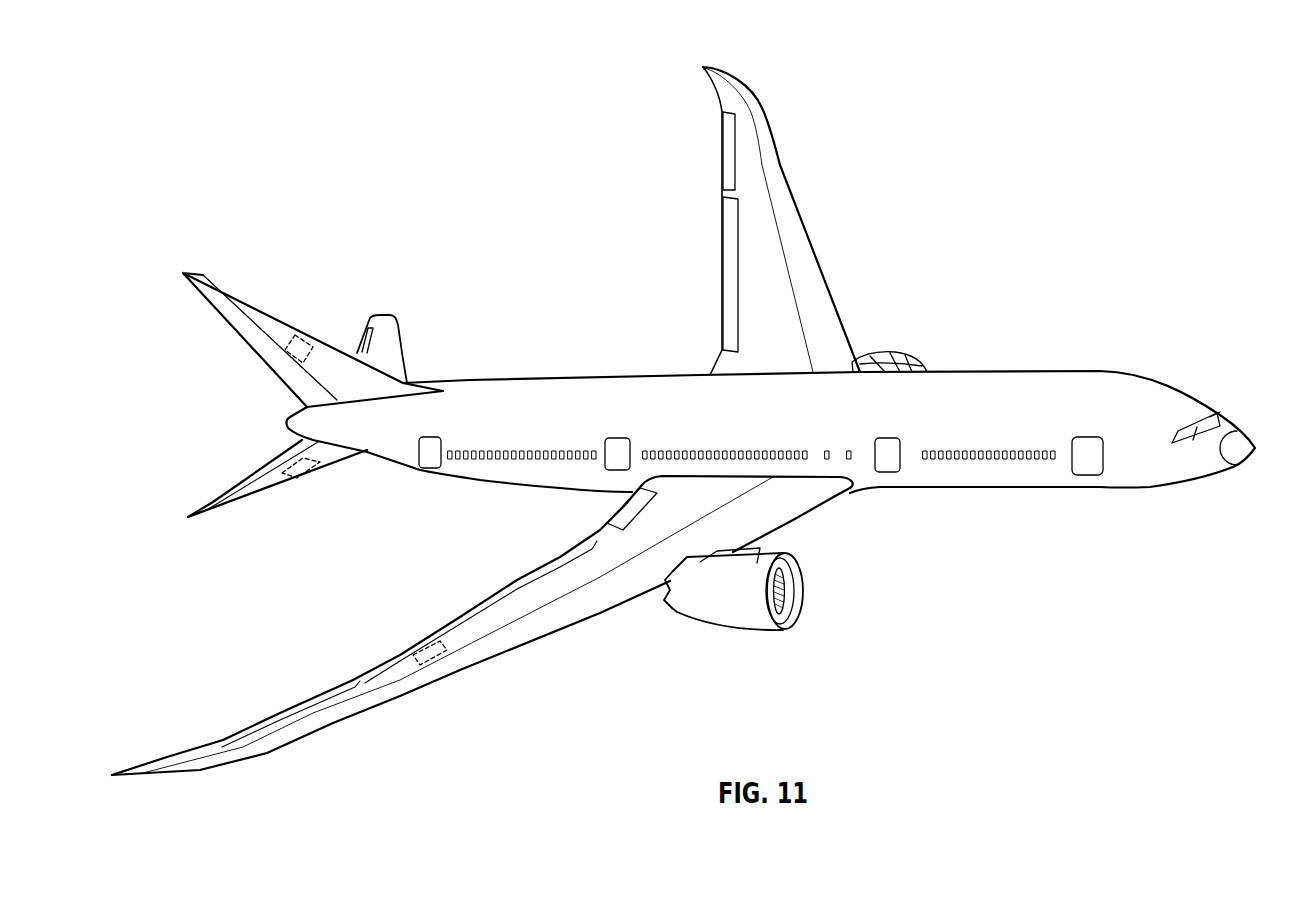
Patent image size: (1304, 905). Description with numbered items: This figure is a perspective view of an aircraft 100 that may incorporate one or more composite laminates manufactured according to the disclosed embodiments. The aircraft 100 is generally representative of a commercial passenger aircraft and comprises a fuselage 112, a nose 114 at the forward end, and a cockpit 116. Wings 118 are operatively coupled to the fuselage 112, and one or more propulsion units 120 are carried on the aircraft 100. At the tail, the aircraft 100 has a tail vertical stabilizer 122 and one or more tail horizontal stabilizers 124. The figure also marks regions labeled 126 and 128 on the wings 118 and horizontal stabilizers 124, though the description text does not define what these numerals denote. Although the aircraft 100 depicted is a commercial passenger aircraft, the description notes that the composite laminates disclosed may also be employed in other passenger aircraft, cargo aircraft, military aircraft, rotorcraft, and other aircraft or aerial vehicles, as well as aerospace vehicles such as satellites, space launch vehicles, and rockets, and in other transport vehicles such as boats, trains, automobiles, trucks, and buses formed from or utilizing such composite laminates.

The aircraft 100 is at (694, 421).
The fuselage 112 is at (990, 380).
The nose 114 is at (1237, 455).
The cockpit 116 is at (1207, 413).
The wings 118 is at (767, 147).
The propulsion units 120 is at (897, 352).
The tail vertical stabilizer 122 is at (250, 302).
The tail horizontal stabilizers 124 is at (390, 347).
The trailing edge 126 is at (319, 345).
The sensor region 128 is at (300, 336).